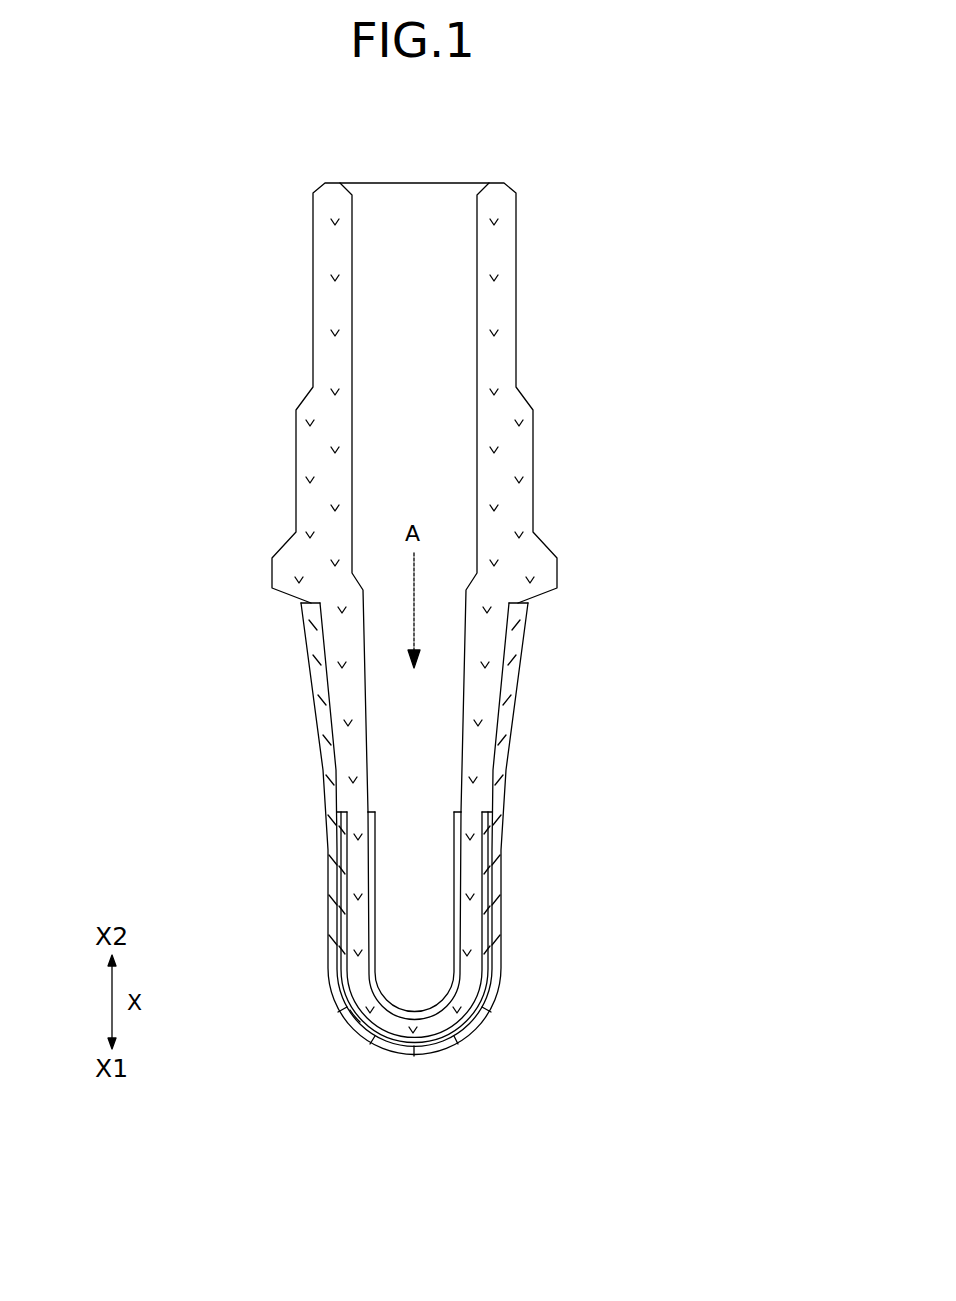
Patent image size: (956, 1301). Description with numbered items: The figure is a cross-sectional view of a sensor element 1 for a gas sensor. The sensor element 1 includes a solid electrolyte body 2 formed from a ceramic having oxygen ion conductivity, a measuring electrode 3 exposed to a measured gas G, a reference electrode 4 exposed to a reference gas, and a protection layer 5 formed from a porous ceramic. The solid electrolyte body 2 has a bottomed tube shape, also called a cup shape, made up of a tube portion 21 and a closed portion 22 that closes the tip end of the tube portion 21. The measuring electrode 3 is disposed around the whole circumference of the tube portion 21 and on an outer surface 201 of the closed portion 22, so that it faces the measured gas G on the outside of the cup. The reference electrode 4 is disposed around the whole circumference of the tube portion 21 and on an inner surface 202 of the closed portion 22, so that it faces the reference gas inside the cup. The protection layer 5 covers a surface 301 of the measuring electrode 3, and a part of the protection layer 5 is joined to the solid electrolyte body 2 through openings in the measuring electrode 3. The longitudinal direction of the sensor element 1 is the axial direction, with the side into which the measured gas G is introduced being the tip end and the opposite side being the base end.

The sensor element 1 is at (549, 165).
The solid electrolyte body 2 is at (544, 490).
The tube portion 21 is at (350, 747).
The closed portion 22 is at (405, 1035).
The outer surface 201 is at (345, 920).
The inner surface 202 is at (365, 905).
The measuring electrode 3 is at (487, 917).
The surface of the measuring electrode 301 is at (487, 855).
The reference electrode 4 is at (452, 963).
The protection layer 5 is at (497, 752).
The measured gas G is at (360, 1032).